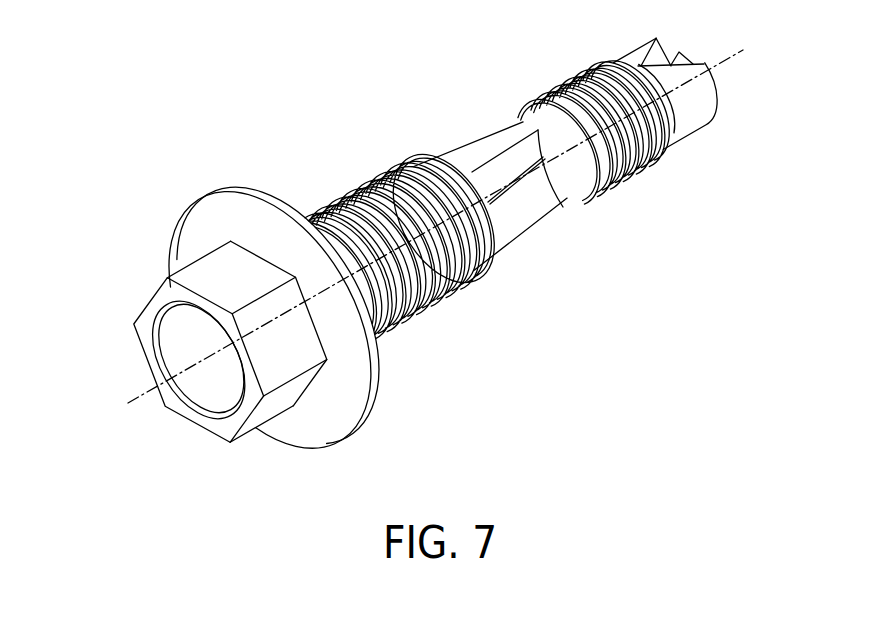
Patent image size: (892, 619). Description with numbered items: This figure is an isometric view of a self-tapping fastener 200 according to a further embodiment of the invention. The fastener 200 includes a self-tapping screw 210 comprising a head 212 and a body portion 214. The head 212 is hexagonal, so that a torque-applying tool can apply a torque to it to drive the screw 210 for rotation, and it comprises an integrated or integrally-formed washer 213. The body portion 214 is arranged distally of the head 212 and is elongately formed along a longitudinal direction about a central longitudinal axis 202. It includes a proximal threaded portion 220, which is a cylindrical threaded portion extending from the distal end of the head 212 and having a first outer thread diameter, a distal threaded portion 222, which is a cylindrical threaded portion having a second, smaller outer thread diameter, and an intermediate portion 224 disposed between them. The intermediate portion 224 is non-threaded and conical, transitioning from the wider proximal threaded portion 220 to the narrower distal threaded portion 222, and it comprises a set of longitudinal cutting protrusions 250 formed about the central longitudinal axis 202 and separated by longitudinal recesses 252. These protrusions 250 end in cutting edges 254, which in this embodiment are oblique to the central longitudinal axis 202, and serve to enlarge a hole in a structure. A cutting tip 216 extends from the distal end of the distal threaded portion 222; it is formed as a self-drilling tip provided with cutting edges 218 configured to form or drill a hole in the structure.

The self-tapping fastener 200 is at (330, 97).
The central longitudinal axis 202 is at (727, 60).
The self-tapping screw 210 is at (336, 144).
The head 212 is at (148, 300).
The washer 213 is at (185, 236).
The body portion 214 is at (574, 298).
The cutting tip 216 is at (692, 149).
The cutting edges 218 is at (647, 53).
The proximal threaded portion 220 is at (420, 310).
The distal threaded portion 222 is at (637, 176).
The intermediate portion 224 is at (510, 250).
The longitudinal cutting protrusions 250 is at (470, 160).
The longitudinal recesses 252 is at (543, 240).
The cutting edges 254 is at (473, 162).